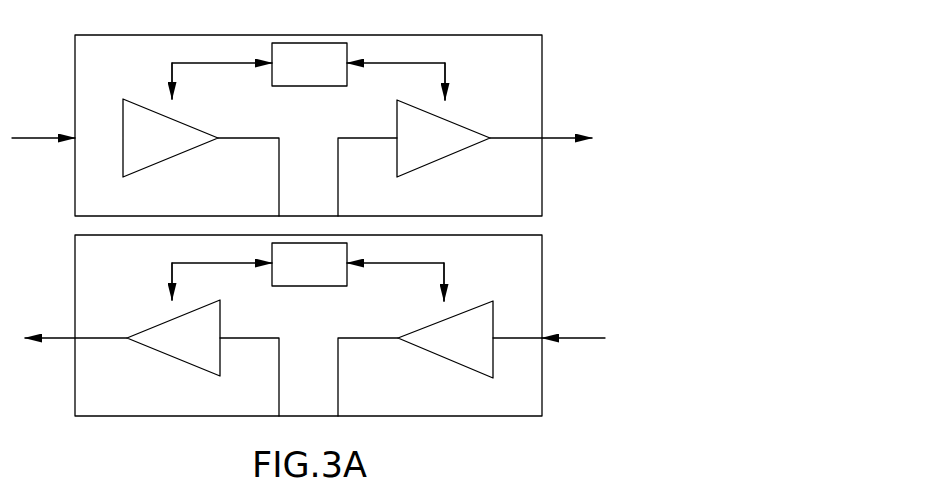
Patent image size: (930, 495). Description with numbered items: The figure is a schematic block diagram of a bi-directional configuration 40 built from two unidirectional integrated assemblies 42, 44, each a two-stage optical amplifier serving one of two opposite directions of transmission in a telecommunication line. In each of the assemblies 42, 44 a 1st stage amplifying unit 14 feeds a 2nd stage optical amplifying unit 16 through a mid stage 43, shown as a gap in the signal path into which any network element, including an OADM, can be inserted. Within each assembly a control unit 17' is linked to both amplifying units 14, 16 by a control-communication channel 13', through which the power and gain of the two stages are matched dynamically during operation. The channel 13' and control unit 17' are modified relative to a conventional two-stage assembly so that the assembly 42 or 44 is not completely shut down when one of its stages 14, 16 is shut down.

The bi-directional configuration 40 is at (623, 60).
The unidirectional integrated assembly 42 is at (542, 87).
The unidirectional integrated assembly 44 is at (542, 287).
The 1st stage amplifying unit 14 is at (172, 160).
The 2nd stage optical amplifying unit 16 is at (437, 160).
The control unit 17' is at (319, 185).
The control-communication channel 13' is at (312, 182).
The mid stage 43 is at (308, 277).